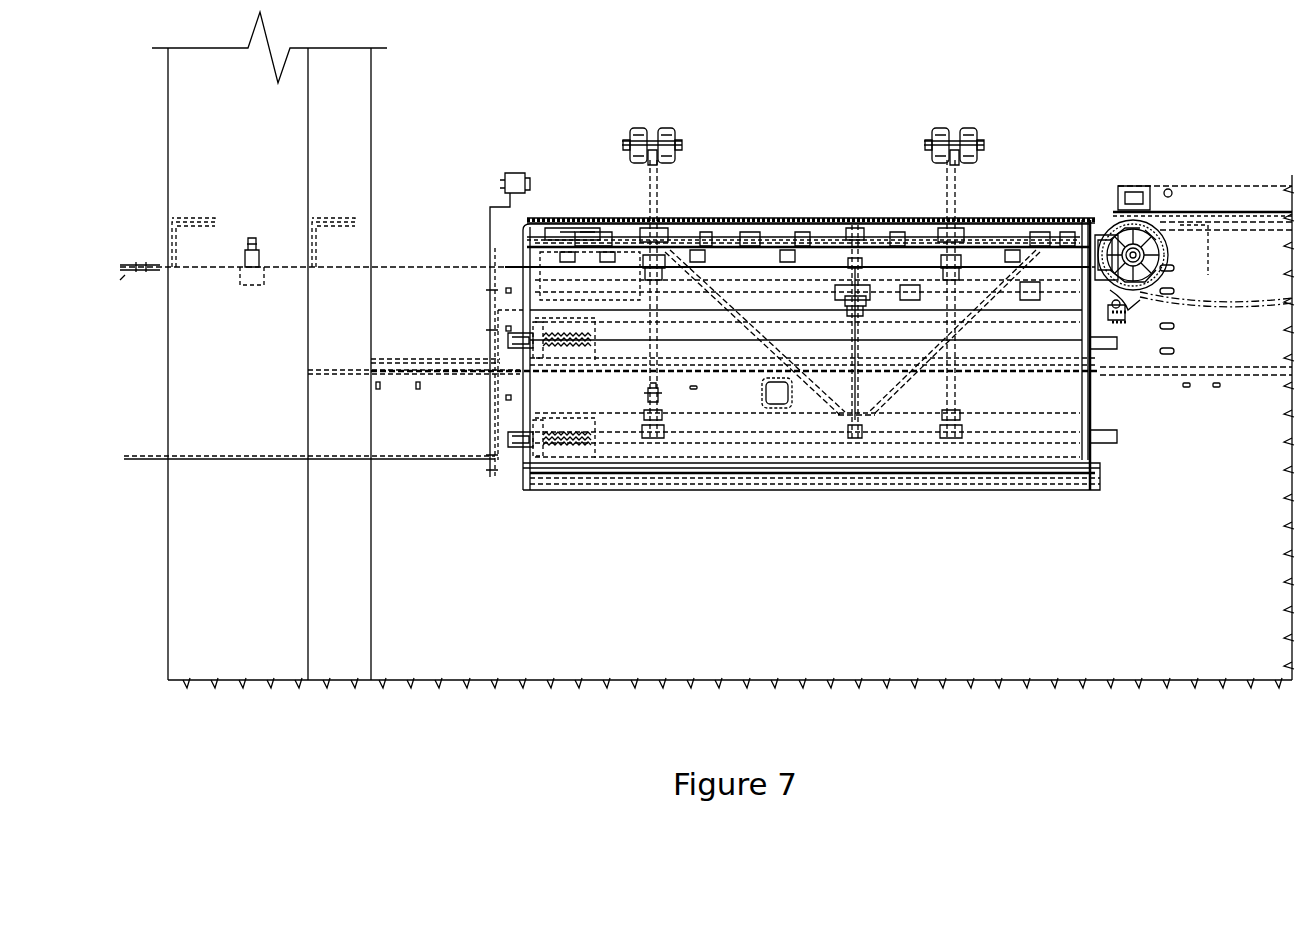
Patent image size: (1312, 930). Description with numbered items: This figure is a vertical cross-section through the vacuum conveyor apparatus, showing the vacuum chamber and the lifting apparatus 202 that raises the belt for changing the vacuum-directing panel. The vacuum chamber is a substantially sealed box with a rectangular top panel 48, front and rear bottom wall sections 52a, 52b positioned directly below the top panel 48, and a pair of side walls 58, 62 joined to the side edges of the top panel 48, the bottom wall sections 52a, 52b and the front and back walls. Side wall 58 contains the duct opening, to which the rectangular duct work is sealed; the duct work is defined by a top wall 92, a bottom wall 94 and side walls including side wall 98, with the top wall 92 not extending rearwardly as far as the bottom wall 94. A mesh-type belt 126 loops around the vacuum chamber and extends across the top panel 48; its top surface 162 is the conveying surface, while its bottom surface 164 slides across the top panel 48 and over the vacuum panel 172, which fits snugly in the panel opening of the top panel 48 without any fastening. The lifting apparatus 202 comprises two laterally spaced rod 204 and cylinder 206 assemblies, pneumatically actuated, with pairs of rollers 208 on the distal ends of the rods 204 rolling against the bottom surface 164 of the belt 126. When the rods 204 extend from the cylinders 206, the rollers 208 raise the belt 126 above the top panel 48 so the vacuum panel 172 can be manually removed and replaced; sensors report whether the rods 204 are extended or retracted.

The top panel 48 is at (755, 213).
The front bottom wall section 52a is at (620, 312).
The rear bottom wall section 52b is at (878, 458).
The side wall 58 is at (503, 415).
The side wall 62 is at (1083, 403).
The top wall 92 is at (402, 267).
The bottom wall 94 is at (467, 460).
The side wall 98 is at (385, 437).
The belt 126 is at (1037, 213).
The top surface 162 is at (820, 213).
The bottom surface 164 is at (843, 212).
The vacuum panel 172 is at (703, 213).
The lifting apparatus 202 is at (690, 120).
The rod 204 is at (647, 193).
The cylinder 206 is at (643, 302).
The rollers 208 is at (633, 132).